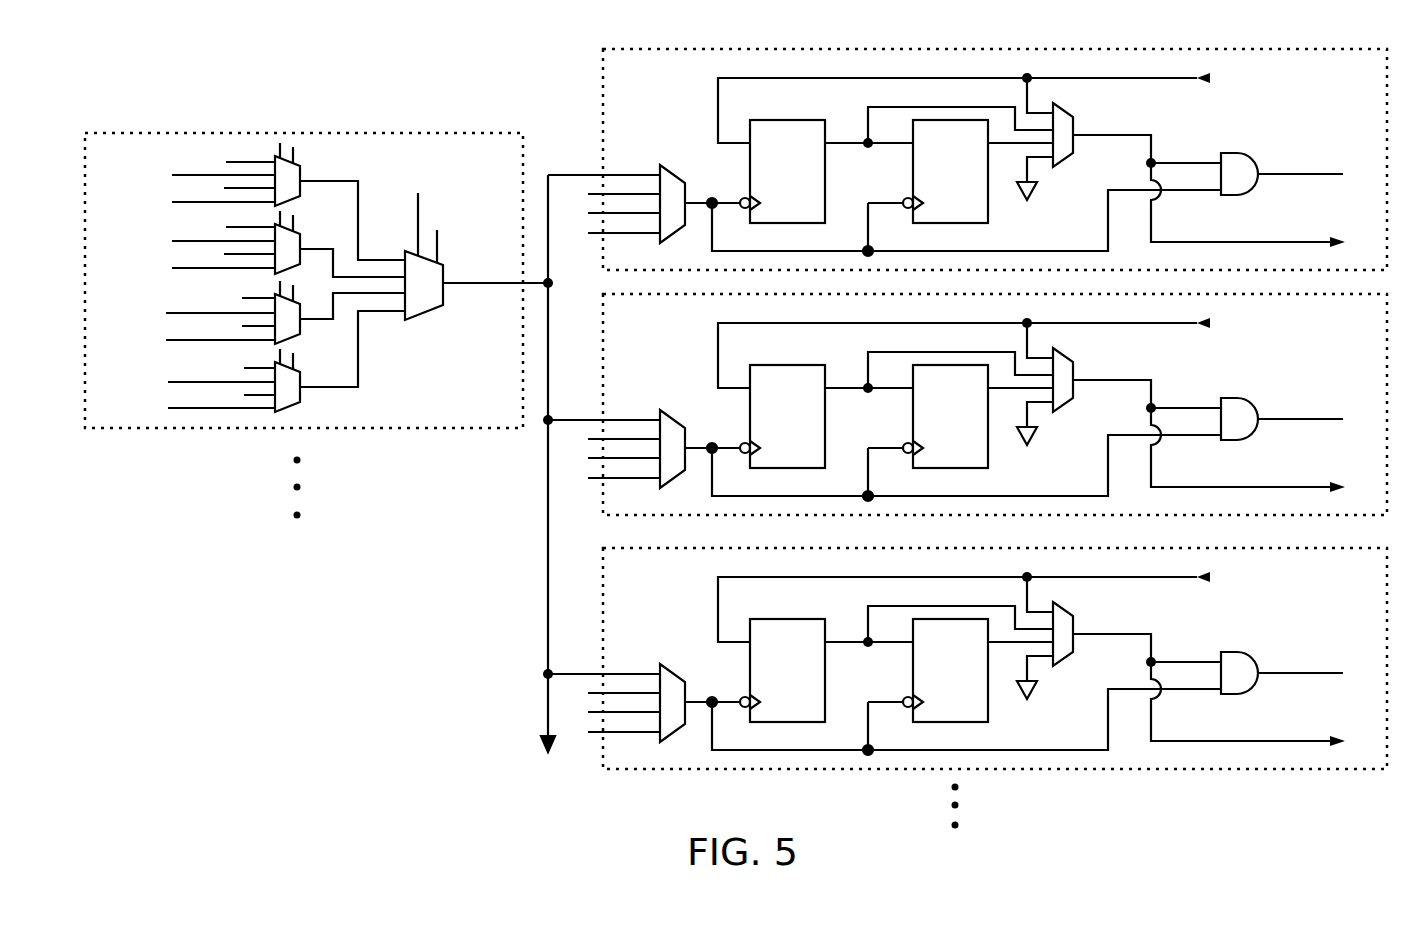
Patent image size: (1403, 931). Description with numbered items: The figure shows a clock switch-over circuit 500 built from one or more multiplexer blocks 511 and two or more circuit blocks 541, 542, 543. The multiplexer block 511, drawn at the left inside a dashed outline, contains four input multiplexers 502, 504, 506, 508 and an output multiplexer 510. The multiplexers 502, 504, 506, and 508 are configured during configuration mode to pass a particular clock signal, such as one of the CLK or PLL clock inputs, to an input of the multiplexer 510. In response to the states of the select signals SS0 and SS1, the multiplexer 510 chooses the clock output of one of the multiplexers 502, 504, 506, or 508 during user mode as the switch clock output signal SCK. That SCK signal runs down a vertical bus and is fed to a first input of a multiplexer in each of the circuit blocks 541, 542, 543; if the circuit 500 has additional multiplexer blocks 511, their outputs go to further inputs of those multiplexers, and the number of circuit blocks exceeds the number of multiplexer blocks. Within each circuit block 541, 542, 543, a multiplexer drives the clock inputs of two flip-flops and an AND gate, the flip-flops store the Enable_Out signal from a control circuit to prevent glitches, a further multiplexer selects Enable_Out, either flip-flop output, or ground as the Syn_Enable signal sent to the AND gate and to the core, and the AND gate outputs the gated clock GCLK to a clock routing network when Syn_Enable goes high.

The clock switch-over circuit 500 is at (754, 28).
The multiplexer 502 is at (302, 176).
The multiplexer 504 is at (302, 244).
The multiplexer 506 is at (303, 327).
The multiplexer 508 is at (303, 396).
The multiplexer 510 is at (427, 312).
The multiplexer block 511 is at (131, 428).
The circuit block 541 is at (993, 49).
The circuit block 542 is at (995, 419).
The circuit block 543 is at (995, 674).